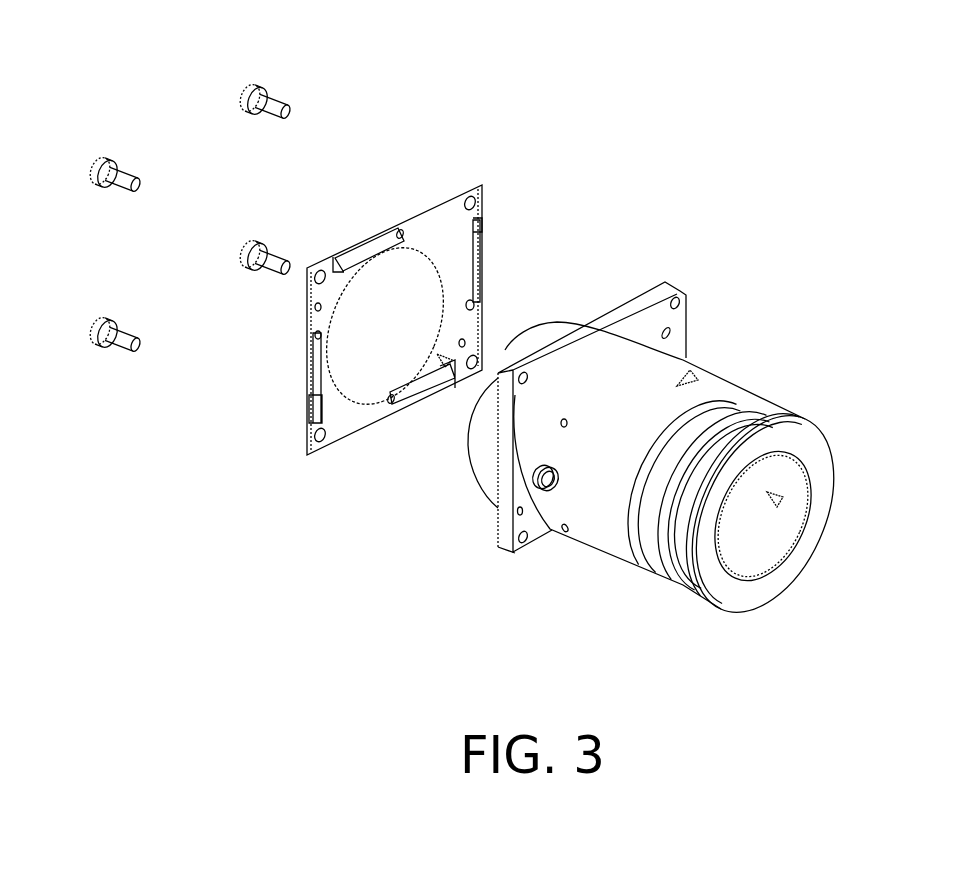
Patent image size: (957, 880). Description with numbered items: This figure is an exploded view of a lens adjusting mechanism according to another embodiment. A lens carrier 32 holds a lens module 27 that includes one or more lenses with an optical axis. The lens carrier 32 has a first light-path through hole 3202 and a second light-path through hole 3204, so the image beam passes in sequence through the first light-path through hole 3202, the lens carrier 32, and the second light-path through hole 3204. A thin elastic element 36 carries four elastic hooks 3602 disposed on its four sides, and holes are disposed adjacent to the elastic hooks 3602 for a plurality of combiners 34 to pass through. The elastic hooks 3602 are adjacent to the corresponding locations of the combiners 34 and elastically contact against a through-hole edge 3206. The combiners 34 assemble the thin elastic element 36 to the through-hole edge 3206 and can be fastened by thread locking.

The lens module 27 is at (750, 537).
The lens carrier 32 is at (709, 445).
The combiners 34 is at (262, 86).
The thin elastic element 36 is at (417, 331).
The first light-path through hole 3202 is at (527, 315).
The second light-path through hole 3204 is at (808, 513).
The through-hole edge 3206 is at (683, 282).
The elastic hooks 3602 is at (388, 240).